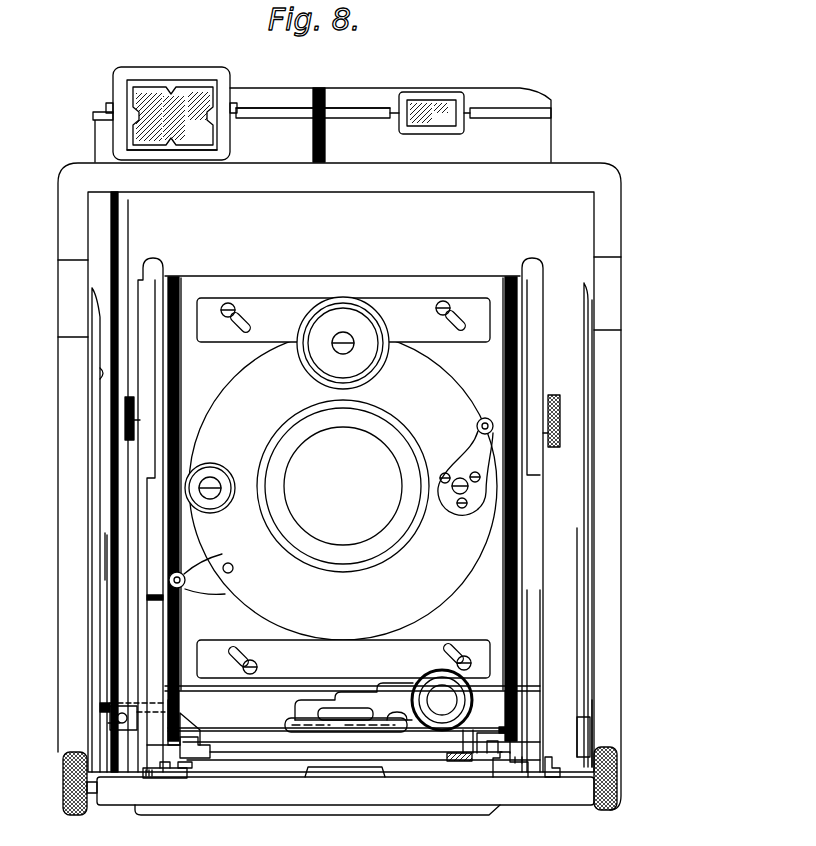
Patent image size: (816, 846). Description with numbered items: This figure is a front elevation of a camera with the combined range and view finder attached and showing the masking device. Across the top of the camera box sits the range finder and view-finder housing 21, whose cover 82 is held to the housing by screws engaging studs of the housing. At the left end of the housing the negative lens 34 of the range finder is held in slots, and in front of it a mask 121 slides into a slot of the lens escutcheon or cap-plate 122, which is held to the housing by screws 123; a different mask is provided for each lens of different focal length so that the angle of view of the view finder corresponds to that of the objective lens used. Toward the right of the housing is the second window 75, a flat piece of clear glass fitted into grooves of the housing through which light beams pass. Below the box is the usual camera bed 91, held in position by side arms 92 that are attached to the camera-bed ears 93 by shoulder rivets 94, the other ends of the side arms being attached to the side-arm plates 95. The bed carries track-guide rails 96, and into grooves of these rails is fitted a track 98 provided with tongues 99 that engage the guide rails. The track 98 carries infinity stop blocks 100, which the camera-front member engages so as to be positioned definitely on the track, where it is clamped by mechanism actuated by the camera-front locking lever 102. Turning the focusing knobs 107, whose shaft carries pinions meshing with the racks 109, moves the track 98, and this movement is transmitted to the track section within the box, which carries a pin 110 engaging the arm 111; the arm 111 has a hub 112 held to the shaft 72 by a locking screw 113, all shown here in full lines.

The range finder and view-finder housing 21 is at (551, 135).
The negative lens 34 is at (200, 150).
The shaft 72 is at (120, 233).
The second window 75 is at (442, 104).
The cover 82 is at (357, 96).
The camera bed 91 is at (332, 785).
The side arms 92 is at (110, 690).
The camera-bed ears 93 is at (592, 736).
The shoulder rivets 94 is at (578, 727).
The side-arm plates 95 is at (98, 375).
The track-guide rails 96 is at (143, 770).
The track 98 is at (252, 762).
The tongues 99 is at (165, 768).
The infinity stop blocks 100 is at (205, 740).
The camera-front locking lever 102 is at (393, 685).
The focusing knobs 107 is at (60, 812).
The racks 109 is at (185, 768).
The pin 110 is at (466, 755).
The arm 111 is at (182, 726).
The hub 112 is at (100, 717).
The locking screw 113 is at (108, 723).
The masks 121 is at (172, 95).
The lens escutcheon or cap-plate 122 is at (120, 138).
The screws 123 is at (106, 106).